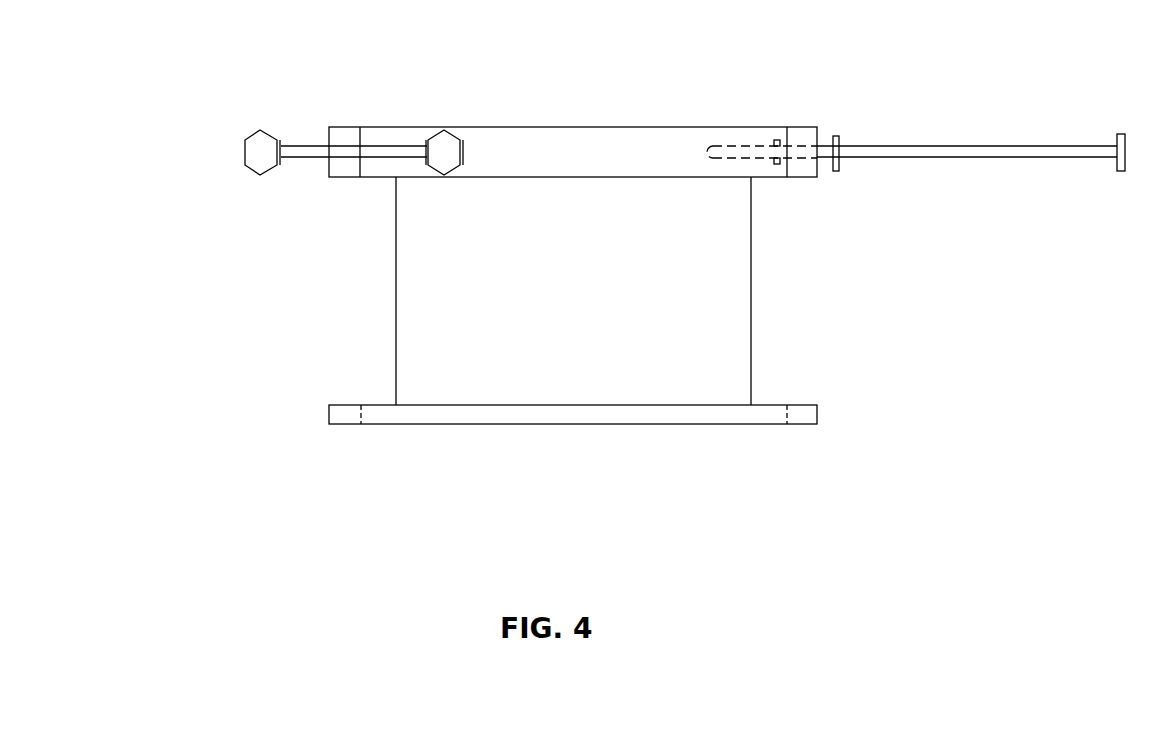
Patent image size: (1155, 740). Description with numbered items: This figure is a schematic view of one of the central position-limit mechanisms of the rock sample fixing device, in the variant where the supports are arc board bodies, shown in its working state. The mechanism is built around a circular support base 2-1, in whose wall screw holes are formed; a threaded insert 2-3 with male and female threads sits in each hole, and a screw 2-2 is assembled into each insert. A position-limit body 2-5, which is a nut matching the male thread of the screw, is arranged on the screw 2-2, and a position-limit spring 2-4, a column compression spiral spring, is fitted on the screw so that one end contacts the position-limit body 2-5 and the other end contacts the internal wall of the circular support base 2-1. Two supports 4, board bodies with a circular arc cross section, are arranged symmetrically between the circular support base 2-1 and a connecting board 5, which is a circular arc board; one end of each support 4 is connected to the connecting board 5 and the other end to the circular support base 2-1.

The circular support base 2-1 is at (520, 143).
The screw 2-2 is at (300, 150).
The threaded insert 2-3 is at (437, 145).
The position-limit spring 2-4 is at (790, 152).
The position-limit body 2-5 is at (780, 143).
The support 4 is at (410, 300).
The connecting board 5 is at (345, 418).